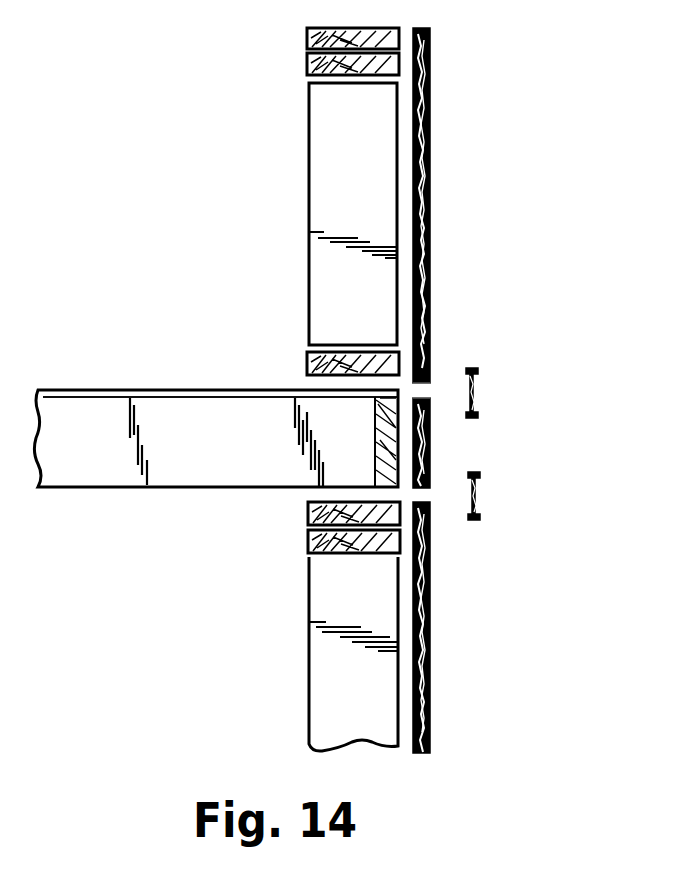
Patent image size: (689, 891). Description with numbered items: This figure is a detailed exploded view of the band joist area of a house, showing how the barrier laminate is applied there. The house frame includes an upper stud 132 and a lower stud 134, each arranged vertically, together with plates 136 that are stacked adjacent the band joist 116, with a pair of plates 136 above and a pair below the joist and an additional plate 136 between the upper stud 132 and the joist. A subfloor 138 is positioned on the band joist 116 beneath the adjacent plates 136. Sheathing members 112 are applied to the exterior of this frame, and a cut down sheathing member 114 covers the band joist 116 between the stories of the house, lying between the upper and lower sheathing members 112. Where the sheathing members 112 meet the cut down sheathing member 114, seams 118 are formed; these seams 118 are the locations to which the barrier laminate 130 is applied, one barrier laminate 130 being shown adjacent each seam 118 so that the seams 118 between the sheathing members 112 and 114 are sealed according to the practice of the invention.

The sheathing member 112 is at (430, 166).
The cut down sheathing member 114 is at (430, 452).
The band joist 116 is at (112, 487).
The seam 118 is at (422, 390).
The barrier laminate 130 is at (478, 393).
The stud 132 is at (309, 194).
The stud 134 is at (309, 676).
The plate 136 is at (307, 64).
The subfloor 138 is at (103, 390).